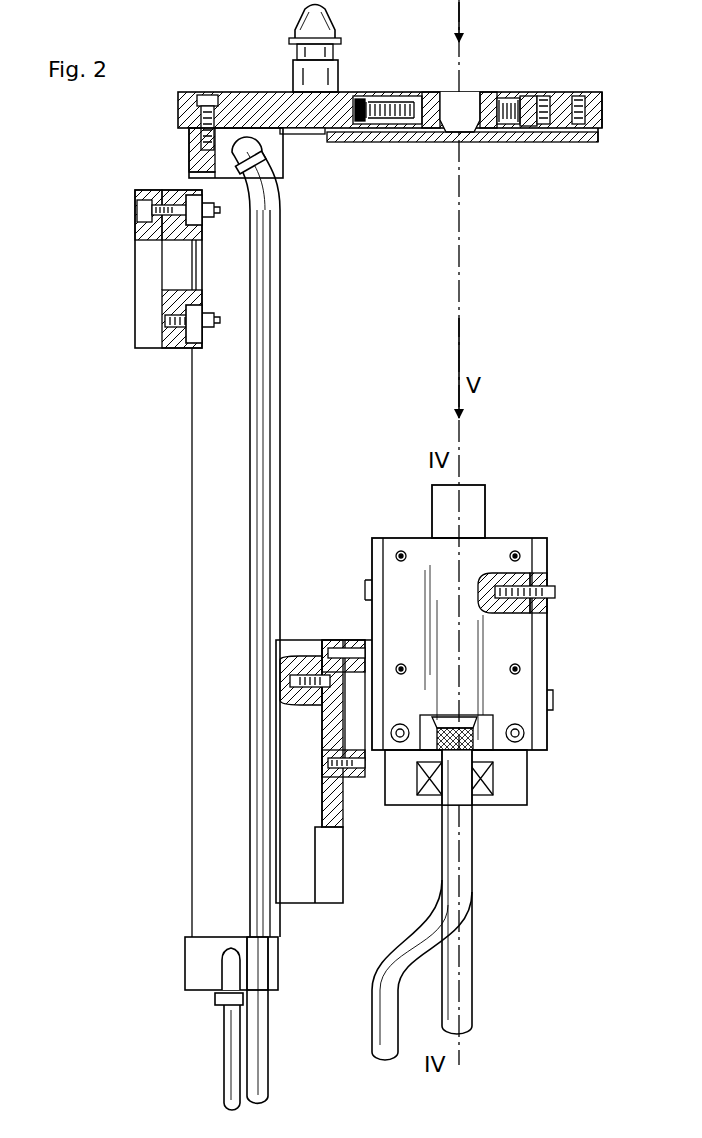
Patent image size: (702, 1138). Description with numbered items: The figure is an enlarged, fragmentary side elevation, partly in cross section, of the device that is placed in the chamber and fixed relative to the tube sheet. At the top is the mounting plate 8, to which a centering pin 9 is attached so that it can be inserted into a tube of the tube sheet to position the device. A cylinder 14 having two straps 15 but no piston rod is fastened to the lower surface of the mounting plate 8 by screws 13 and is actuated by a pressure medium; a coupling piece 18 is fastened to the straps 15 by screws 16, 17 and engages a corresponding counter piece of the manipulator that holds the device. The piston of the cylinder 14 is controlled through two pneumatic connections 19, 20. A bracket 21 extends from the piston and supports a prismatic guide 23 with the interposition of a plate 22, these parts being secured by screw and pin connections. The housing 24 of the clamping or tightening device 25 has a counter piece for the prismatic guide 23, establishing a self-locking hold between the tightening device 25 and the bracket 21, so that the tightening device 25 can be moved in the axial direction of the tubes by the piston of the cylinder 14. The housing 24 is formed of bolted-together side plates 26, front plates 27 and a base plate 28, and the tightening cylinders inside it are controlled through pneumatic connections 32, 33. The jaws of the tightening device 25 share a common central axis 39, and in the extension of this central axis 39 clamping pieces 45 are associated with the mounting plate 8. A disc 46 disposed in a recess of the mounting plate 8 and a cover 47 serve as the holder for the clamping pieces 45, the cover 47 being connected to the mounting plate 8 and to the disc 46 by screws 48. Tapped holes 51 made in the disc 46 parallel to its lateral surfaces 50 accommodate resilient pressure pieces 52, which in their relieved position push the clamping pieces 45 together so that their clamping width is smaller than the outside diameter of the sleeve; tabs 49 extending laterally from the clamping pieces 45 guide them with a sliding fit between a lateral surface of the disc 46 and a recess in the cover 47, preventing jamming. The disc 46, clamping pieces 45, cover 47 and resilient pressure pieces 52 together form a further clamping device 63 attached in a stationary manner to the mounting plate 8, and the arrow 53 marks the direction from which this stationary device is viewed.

The mounting plate 8 is at (263, 92).
The centering pin 9 is at (312, 14).
The screw 13 is at (213, 96).
The cylinder 14 is at (189, 175).
The strap 15 is at (190, 348).
The screw 16 is at (165, 245).
The screw 17 is at (140, 212).
The coupling piece 18 is at (127, 317).
The pneumatic connection 19 is at (229, 1090).
The pneumatic connection 20 is at (256, 1040).
The bracket 21 is at (285, 648).
The plate 22 is at (340, 640).
The prismatic guide 23 is at (343, 795).
The housing 24 is at (562, 648).
The tightening device 25 is at (532, 514).
The side plate 26 is at (524, 552).
The front plate 27 is at (540, 732).
The base plate 28 is at (515, 800).
The pneumatic connection 32 is at (468, 928).
The pneumatic connection 33 is at (466, 984).
The central axis 39 is at (462, 266).
The clamping piece 45 is at (449, 96).
The disc 46 is at (522, 100).
The cover 47 is at (560, 142).
The screw 48 is at (548, 142).
The tab 49 is at (430, 94).
The lateral surface 50 is at (576, 100).
The tapped hole 51 is at (362, 98).
The resilient pressure piece 52 is at (390, 100).
The arrow 53 is at (462, 22).
The clamping device 63 is at (507, 80).